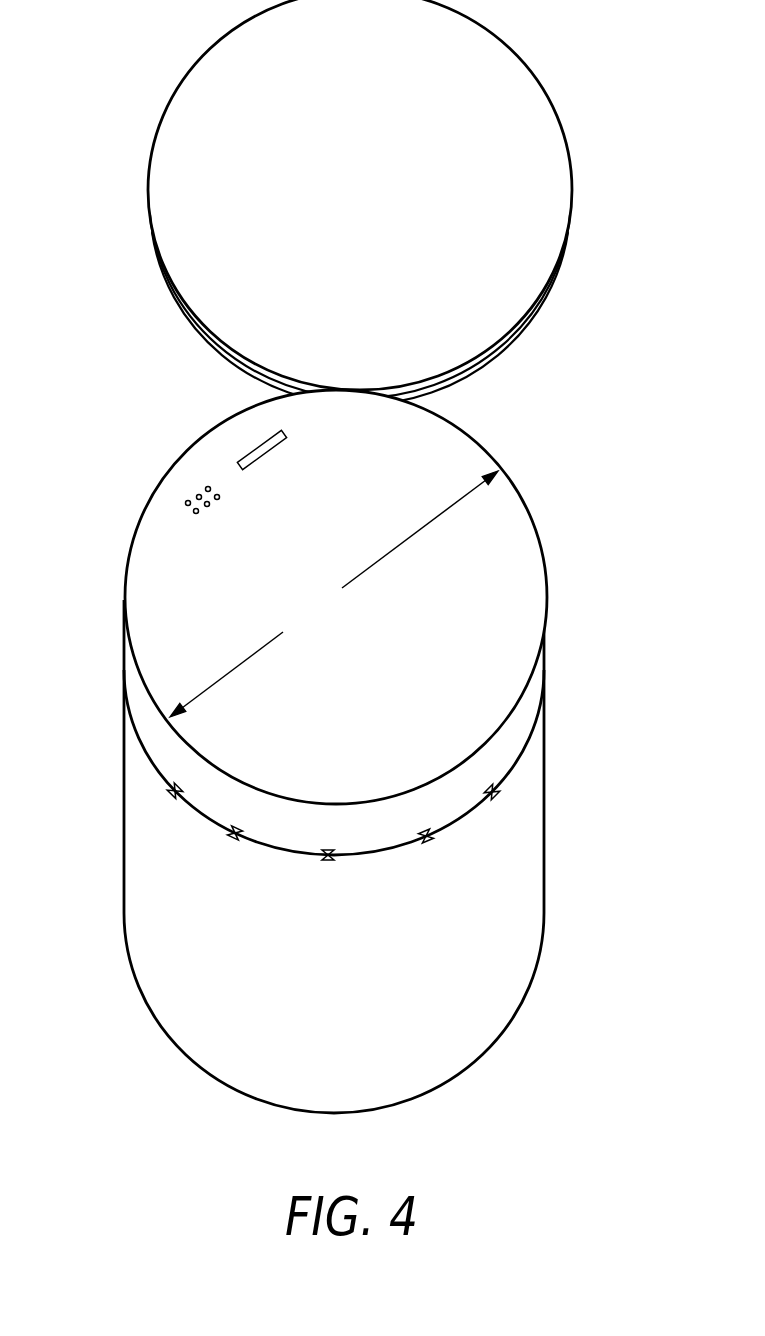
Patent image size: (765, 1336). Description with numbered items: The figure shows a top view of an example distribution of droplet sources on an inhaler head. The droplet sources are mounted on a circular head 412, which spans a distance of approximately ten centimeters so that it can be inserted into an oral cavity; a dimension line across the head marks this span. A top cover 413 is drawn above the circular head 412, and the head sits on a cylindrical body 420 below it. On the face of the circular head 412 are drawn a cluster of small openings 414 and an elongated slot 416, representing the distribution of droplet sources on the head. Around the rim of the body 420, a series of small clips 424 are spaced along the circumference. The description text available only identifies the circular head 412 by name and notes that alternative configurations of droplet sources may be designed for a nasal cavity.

The circular head 412 is at (428, 454).
The top cover 413 is at (558, 84).
The vent holes 414 is at (185, 513).
The slot 416 is at (265, 454).
The canister body 420 is at (115, 757).
The clips 424 is at (432, 837).